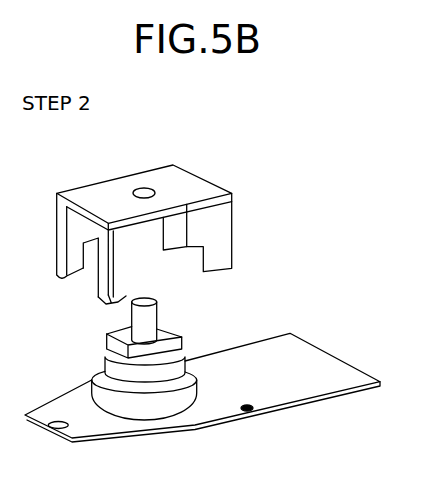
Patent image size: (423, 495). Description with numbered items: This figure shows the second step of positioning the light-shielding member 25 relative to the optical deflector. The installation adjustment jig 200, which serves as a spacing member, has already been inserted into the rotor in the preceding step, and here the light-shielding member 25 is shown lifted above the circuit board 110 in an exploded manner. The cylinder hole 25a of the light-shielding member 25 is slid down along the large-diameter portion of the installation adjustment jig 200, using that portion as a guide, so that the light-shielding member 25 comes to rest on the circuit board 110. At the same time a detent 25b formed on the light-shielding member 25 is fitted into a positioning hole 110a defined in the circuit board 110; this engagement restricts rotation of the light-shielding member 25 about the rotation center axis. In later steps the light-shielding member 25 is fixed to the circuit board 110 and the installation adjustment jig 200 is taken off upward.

The light-shielding member 25 is at (228, 190).
The cylinder hole 25a is at (144, 188).
The detent 25b is at (118, 301).
The installation adjustment jig 200 is at (158, 308).
The circuit board 110 is at (317, 356).
The positioning hole 110a is at (124, 430).